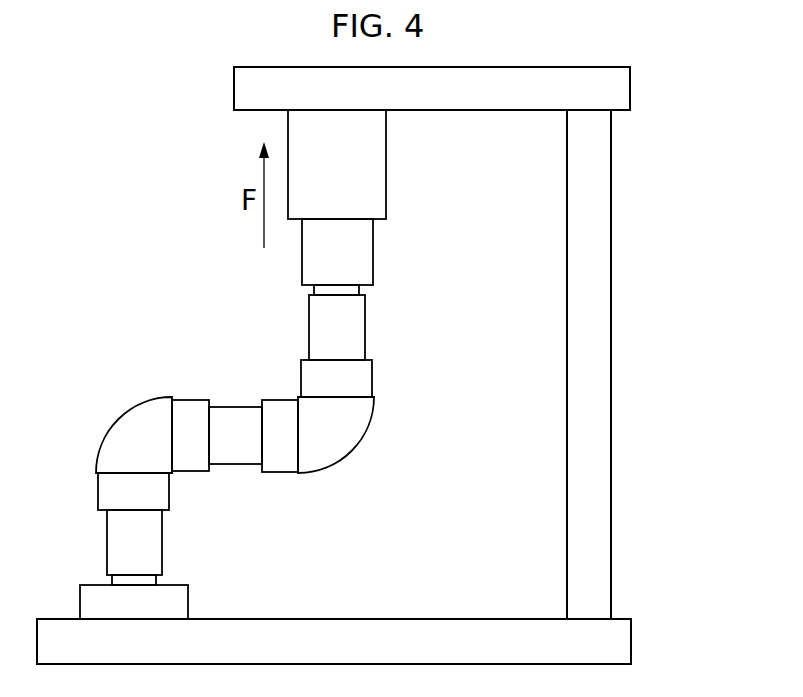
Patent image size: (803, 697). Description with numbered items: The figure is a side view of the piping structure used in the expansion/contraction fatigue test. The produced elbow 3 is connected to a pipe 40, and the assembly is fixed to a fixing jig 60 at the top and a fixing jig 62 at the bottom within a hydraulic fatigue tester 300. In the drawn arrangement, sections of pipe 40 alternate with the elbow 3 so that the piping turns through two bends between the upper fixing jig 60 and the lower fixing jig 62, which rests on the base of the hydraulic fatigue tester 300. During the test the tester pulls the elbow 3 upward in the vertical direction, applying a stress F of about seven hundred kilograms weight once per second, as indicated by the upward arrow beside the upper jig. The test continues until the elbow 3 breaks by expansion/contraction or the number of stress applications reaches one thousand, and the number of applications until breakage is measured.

The hydraulic fatigue tester 300 is at (624, 222).
The fixing jig 60 is at (373, 258).
The pipe 40 is at (365, 327).
The elbow 3 is at (363, 437).
The fixing jig 62 is at (188, 603).